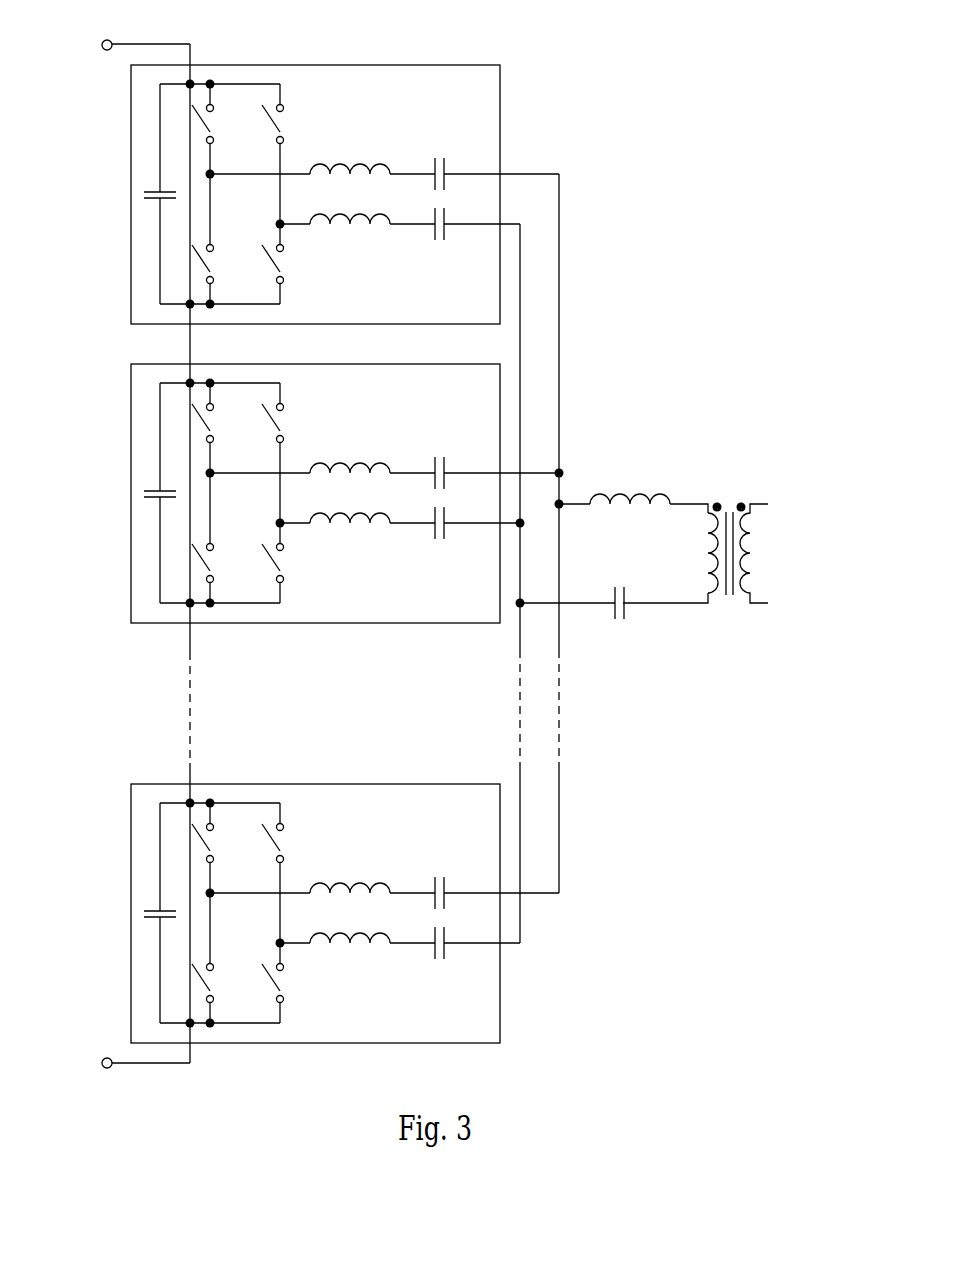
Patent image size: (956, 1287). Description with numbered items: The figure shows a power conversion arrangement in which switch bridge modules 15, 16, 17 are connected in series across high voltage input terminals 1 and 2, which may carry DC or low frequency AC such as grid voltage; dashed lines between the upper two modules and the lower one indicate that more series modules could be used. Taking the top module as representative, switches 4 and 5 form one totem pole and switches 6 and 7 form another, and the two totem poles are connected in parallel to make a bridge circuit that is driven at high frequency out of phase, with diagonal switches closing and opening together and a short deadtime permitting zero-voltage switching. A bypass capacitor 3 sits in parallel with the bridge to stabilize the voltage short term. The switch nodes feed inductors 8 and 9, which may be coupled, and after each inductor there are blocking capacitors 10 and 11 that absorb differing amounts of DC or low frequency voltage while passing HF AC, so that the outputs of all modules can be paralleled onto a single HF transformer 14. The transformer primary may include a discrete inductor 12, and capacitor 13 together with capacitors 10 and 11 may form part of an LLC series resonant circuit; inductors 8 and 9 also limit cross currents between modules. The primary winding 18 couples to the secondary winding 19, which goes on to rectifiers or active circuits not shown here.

The high voltage input terminal 1 is at (117, 52).
The high voltage input terminal 2 is at (119, 1053).
The bypass capacitor 3 is at (150, 203).
The switch 4 is at (190, 117).
The switch 5 is at (195, 267).
The switch 6 is at (290, 125).
The switch 7 is at (290, 267).
The inductor 8 is at (333, 160).
The inductor 9 is at (348, 232).
The blocking capacitor 10 is at (450, 167).
The blocking capacitor 11 is at (450, 230).
The primary discrete inductor 12 is at (607, 490).
The capacitor 13 is at (628, 617).
The HF transformer 14 is at (727, 493).
The switch bridge module 15 is at (347, 54).
The switch bridge module 16 is at (426, 634).
The switch bridge module 17 is at (478, 1053).
The transformer primary winding 18 is at (705, 545).
The secondary winding 19 is at (760, 543).